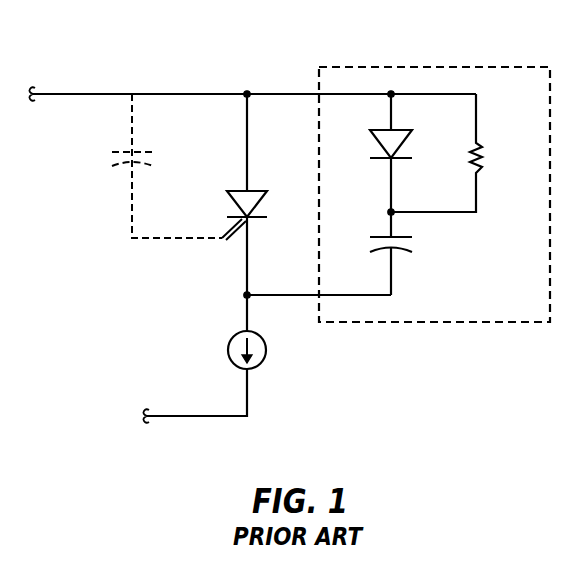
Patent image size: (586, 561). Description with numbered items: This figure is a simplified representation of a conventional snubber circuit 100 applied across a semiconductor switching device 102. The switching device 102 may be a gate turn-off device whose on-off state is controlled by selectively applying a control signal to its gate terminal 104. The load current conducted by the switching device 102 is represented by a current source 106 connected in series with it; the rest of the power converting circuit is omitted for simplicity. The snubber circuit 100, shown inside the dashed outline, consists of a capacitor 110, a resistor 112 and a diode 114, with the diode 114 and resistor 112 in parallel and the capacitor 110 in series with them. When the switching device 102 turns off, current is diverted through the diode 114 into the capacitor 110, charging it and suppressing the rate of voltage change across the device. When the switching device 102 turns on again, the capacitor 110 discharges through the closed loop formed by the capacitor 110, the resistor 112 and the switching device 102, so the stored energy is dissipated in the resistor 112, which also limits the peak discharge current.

The snubber circuit 100 is at (441, 58).
The switching device 102 is at (240, 190).
The gate terminal 104 is at (229, 229).
The current source 106 is at (265, 359).
The capacitor 110 is at (400, 229).
The resistor 112 is at (482, 157).
The diode 114 is at (400, 133).